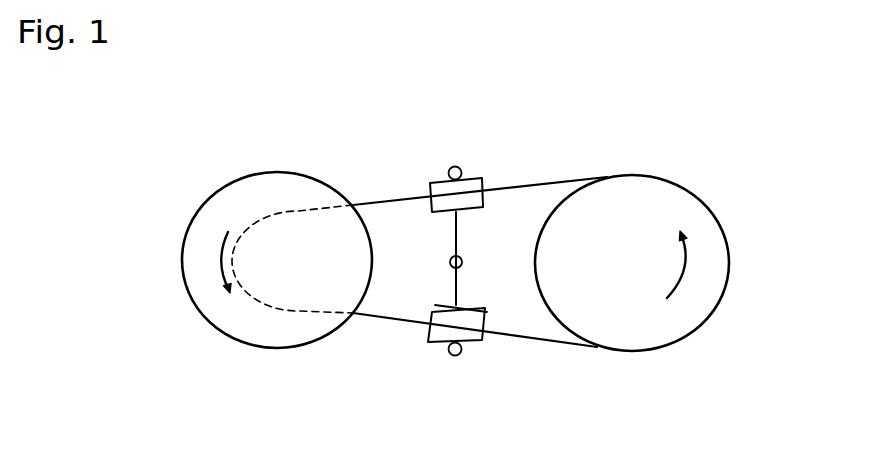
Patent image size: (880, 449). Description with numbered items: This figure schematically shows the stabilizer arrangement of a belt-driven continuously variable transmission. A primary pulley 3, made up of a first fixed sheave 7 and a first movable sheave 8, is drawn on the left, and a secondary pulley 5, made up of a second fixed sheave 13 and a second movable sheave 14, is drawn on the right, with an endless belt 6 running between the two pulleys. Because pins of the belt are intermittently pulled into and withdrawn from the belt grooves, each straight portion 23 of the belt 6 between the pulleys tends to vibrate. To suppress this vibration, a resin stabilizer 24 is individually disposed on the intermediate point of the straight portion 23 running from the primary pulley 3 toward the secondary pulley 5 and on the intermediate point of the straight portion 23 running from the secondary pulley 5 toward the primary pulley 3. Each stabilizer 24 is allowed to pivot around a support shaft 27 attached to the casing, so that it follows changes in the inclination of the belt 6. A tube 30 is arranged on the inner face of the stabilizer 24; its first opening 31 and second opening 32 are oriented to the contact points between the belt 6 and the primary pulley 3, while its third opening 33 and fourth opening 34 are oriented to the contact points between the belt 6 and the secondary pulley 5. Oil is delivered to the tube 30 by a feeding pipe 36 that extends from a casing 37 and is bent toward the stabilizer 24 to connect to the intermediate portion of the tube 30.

The primary pulley 3 is at (227, 221).
The secondary pulley 5 is at (687, 221).
The belt 6 is at (427, 242).
The straight portion 23 is at (548, 186).
The first fixed sheave 7 is at (183, 259).
The first movable sheave 8 is at (227, 260).
The second fixed sheave 13 is at (687, 263).
The second movable sheave 14 is at (727, 239).
The stabilizer 24 is at (475, 166).
The support shaft 27 is at (455, 166).
The tube 30 is at (449, 215).
The first opening 31 is at (419, 180).
The second opening 32 is at (430, 216).
The third opening 33 is at (478, 159).
The fourth opening 34 is at (478, 159).
The feeding pipe 36 is at (462, 236).
The casing 37 is at (462, 263).